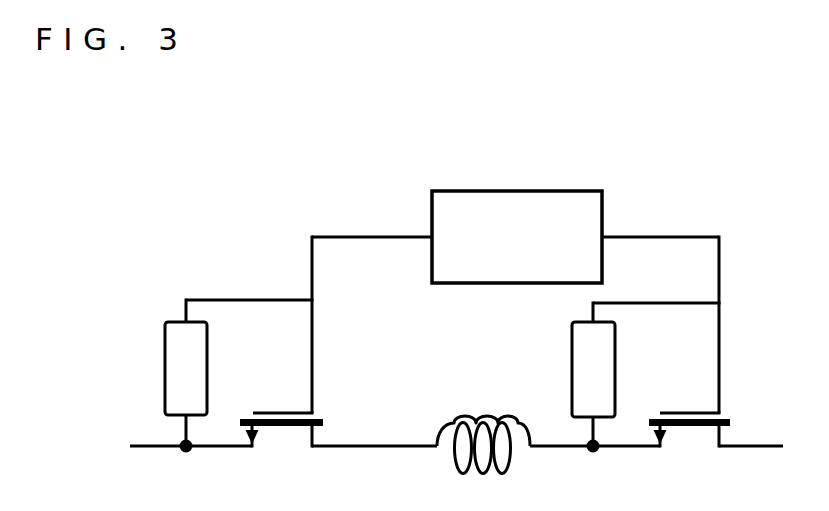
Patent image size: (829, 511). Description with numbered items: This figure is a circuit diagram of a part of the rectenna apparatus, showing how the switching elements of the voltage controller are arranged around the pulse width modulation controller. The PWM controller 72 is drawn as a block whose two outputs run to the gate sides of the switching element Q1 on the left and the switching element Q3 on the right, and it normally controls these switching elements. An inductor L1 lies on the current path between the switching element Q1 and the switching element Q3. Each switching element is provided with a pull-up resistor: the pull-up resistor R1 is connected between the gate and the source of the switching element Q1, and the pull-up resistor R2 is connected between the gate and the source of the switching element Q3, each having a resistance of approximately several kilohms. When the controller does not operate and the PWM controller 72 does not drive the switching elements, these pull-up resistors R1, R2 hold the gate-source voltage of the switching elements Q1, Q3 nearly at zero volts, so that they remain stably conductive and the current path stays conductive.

The PWM controller 72 is at (520, 191).
The pull-up resistor R1 is at (212, 375).
The pull-up resistor R2 is at (646, 377).
The switching element Q1 is at (281, 458).
The switching element Q3 is at (689, 458).
The inductor L1 is at (483, 420).